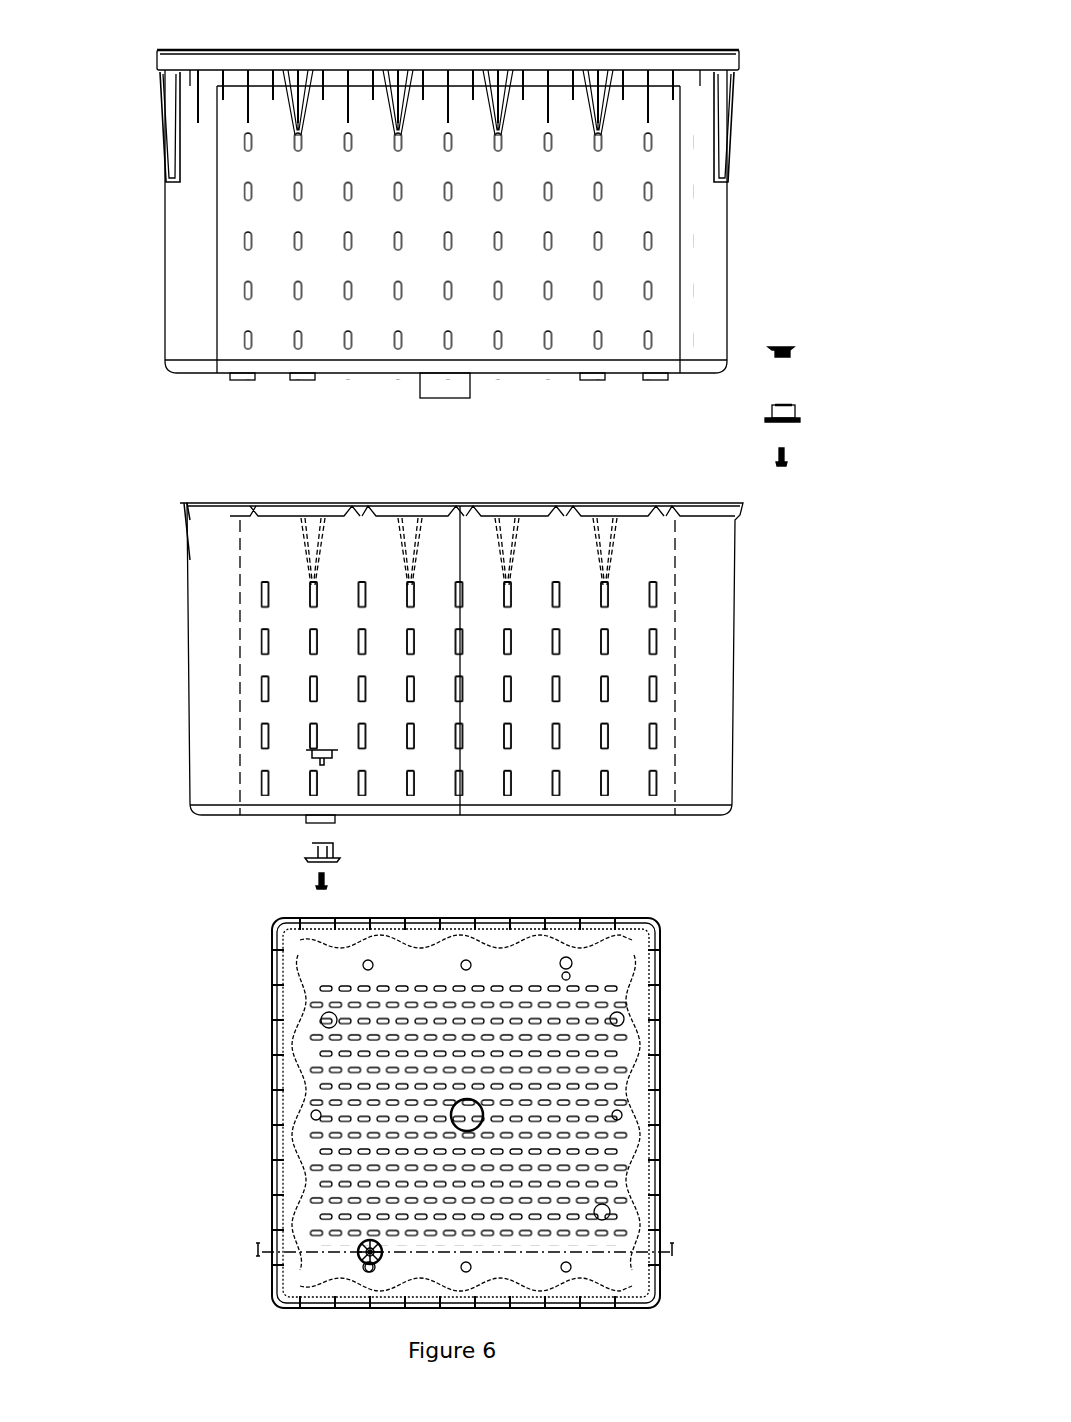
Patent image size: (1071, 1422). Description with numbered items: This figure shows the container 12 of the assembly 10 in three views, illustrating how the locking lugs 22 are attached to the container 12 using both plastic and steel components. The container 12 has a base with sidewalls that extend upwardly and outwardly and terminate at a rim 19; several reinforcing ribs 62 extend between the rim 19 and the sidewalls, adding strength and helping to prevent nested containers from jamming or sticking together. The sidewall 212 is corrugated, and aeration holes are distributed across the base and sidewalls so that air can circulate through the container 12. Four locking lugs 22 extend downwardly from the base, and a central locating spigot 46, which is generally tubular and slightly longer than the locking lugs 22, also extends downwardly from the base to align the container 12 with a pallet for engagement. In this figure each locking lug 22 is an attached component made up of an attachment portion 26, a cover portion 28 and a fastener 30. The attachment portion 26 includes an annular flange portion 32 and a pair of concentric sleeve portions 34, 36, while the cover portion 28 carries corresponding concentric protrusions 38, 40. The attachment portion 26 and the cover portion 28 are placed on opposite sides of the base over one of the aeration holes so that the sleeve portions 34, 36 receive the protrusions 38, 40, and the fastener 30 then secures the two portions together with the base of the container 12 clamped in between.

The basket assembly 10 is at (135, 243).
The container 12 is at (200, 610).
The rim 19 is at (245, 58).
The locking lug 22 is at (242, 381).
The attachment portion 26 is at (850, 305).
The cover portion 28 is at (780, 345).
The fastener 30 is at (786, 462).
The annular flange portion 32 is at (770, 421).
The sleeve portion 34 is at (770, 413).
The sleeve portion 36 is at (778, 406).
The concentric protrusion 38 is at (793, 350).
The concentric protrusion 40 is at (786, 357).
The central locating spigot 46 is at (432, 383).
The rib 62 is at (722, 85).
The side wall 212 is at (712, 212).